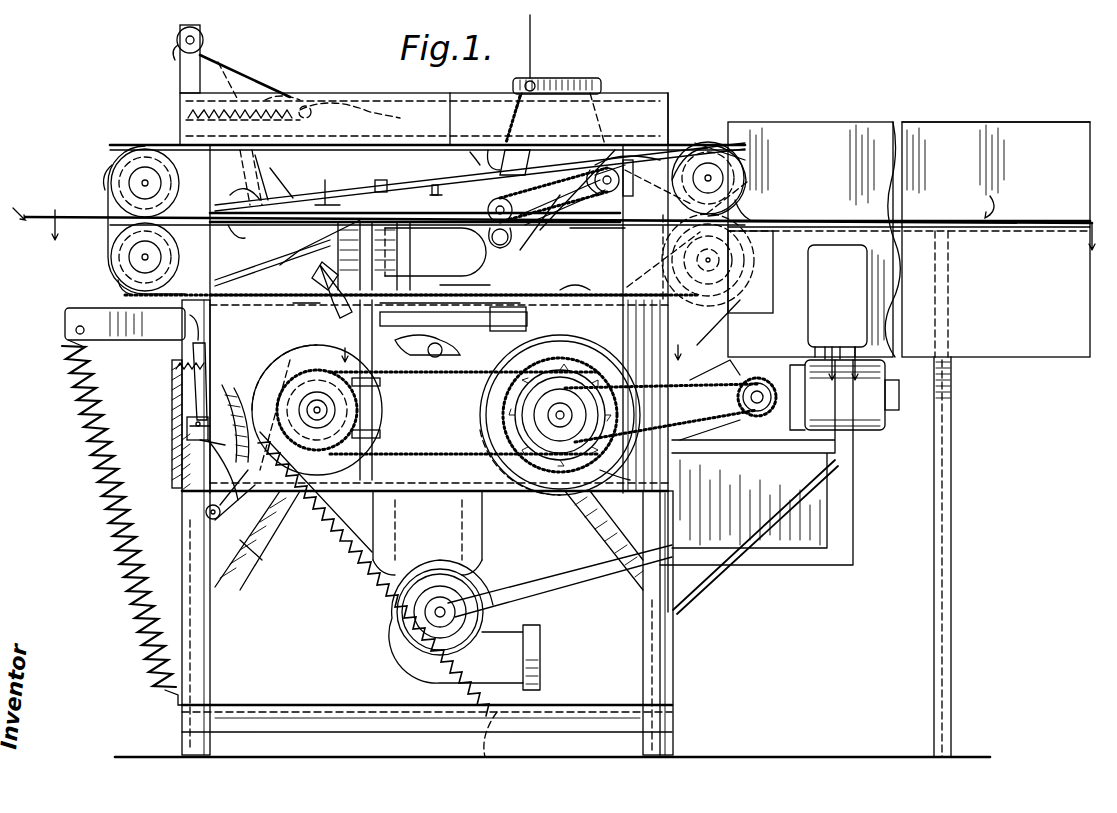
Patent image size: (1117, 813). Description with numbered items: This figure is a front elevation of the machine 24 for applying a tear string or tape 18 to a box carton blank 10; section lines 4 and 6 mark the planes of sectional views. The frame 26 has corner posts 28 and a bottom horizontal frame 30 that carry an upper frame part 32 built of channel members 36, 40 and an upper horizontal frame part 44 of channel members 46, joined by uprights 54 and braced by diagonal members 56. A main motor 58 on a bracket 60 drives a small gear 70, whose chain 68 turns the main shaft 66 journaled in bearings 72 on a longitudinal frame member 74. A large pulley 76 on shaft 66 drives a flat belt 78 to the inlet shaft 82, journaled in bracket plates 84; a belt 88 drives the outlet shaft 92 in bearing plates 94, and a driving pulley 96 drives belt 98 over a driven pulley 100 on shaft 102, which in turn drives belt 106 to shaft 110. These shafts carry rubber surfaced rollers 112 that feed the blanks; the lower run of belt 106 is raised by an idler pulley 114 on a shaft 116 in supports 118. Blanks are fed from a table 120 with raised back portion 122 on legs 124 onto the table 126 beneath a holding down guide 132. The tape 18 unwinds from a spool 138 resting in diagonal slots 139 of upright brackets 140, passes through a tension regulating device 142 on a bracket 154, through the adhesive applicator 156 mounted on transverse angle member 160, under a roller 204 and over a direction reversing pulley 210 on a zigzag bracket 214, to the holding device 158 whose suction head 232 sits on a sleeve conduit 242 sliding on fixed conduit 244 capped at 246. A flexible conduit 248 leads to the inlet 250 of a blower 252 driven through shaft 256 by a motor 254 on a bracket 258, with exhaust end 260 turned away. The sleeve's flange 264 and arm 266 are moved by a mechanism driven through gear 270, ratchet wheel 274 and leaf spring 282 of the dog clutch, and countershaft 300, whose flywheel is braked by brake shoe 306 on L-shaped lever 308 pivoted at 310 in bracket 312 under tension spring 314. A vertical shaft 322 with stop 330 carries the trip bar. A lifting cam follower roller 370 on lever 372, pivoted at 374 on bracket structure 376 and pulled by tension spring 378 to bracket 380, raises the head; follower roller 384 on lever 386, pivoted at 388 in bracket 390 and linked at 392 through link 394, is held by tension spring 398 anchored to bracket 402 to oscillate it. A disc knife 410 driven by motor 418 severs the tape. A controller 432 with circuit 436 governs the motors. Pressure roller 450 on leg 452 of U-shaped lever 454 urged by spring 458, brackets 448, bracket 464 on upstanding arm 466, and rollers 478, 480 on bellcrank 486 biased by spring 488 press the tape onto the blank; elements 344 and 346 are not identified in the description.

The section line 4- 4 is at (560, 233).
The section line 6- 6 is at (514, 345).
The box carton blank 10 is at (497, 199).
The tear string 18 is at (268, 80).
The machine 24 is at (144, 120).
The frame 26 is at (178, 748).
The vertical corner posts 28 is at (205, 650).
The horizontal frame 30 is at (280, 735).
The upper frame part 32 is at (173, 352).
The channel member 36 is at (442, 500).
The channel member 40 is at (190, 458).
The upper horizontal frame part 44 is at (405, 97).
The channel member 46 is at (452, 96).
The vertical corner posts 54 is at (707, 490).
The diagonal bracing members 56 is at (236, 568).
The main driving motor 58 is at (880, 425).
The bracket 60 is at (778, 508).
The shaft 66 is at (592, 406).
The chain 68 is at (715, 382).
The small gear 70 is at (752, 402).
The bearings 72 is at (320, 403).
The longitudinal frame member 74 is at (258, 525).
The large pulley 76 is at (585, 350).
The flat belt 78 is at (698, 345).
The shaft 82 is at (765, 222).
The bracket plates 84 is at (773, 307).
The belt 88 is at (576, 292).
The shaft 92 is at (112, 262).
The bearing plates 94 is at (115, 160).
The driving pulley 96 is at (118, 285).
The belt 98 is at (240, 275).
The driven pulley 100 is at (725, 160).
The shaft 102 is at (752, 182).
The belt 106 is at (660, 189).
The shaft 110 is at (98, 178).
The rubber surfaced rollers 112 is at (105, 190).
The idler pulley 114 is at (605, 170).
The shaft 116 is at (615, 190).
The supports 118 is at (590, 170).
The table 120 is at (1049, 361).
The raised back portion 122 is at (1008, 130).
The legs 124 is at (951, 482).
The table 126 is at (310, 240).
The holding down guide 132 is at (462, 212).
The spool 138 is at (178, 50).
The diagonal slots 139 is at (200, 37).
The upright brackets 140 is at (185, 80).
The tension regulating device 142 is at (322, 100).
The bracket 154 is at (233, 93).
The adhesive applicator 156 is at (517, 152).
The suction device 158 is at (476, 270).
The transverse angle member 160 is at (495, 140).
The roller or pulley 204 is at (481, 158).
The direction reversing pulley 210 is at (562, 194).
The zigzag bracket 214 is at (548, 170).
The suction head 232 is at (500, 263).
The sleeve conduit 242 is at (425, 305).
The fixed conduit 244 is at (432, 195).
The cap 246 is at (470, 150).
The flexible conduit 248 is at (420, 540).
The inlet 250 is at (382, 575).
The blower 252 is at (400, 670).
The motor 254 is at (392, 640).
The shaft 256 is at (440, 596).
The bracket 258 is at (486, 558).
The exhaust end 260 is at (540, 640).
The circular flange 264 is at (450, 352).
The arm 266 is at (525, 318).
The gear 270 is at (548, 413).
The ratchet wheel 274 is at (612, 470).
The leaf spring 282 is at (586, 366).
The shaft 300 is at (317, 410).
The brake shoe 306 is at (200, 447).
The L-shaped lever 308 is at (196, 400).
The pivot 310 is at (200, 442).
The bracket 312 is at (190, 428).
The tension spring 314 is at (195, 372).
The vertical shaft 322 is at (378, 178).
The stop 330 is at (330, 185).
The shaft 344 is at (360, 390).
The chain 346 is at (465, 413).
The follower roller 370 is at (292, 350).
The lever 372 is at (80, 322).
The pivot 374 is at (200, 328).
The bracket structure 376 is at (290, 322).
The tension spring 378 is at (88, 421).
The bracket 380 is at (165, 690).
The follower roller 384 is at (280, 372).
The lever 386 is at (293, 306).
The pivot 388 is at (205, 520).
The bracket 390 is at (248, 545).
The pivot 392 is at (339, 290).
The angularly shaped link 394 is at (495, 312).
The tension spring 398 is at (345, 560).
The bracket 402 is at (488, 760).
The disc knife 410 is at (374, 256).
The motor 418 is at (330, 262).
The controller 432 is at (846, 302).
The circuit 436 is at (773, 568).
The depending brackets 448 is at (512, 243).
The pressure roller 450 is at (502, 205).
The leg 452 is at (553, 195).
The U-shaped lever 454 is at (612, 62).
The spring 458 is at (530, 108).
The bracket 464 is at (282, 182).
The upstanding arm 466 is at (240, 172).
The pressure roller 478 is at (246, 242).
The pressure roller 480 is at (240, 192).
The bellcrank 486 is at (270, 160).
The spring 488 is at (282, 95).